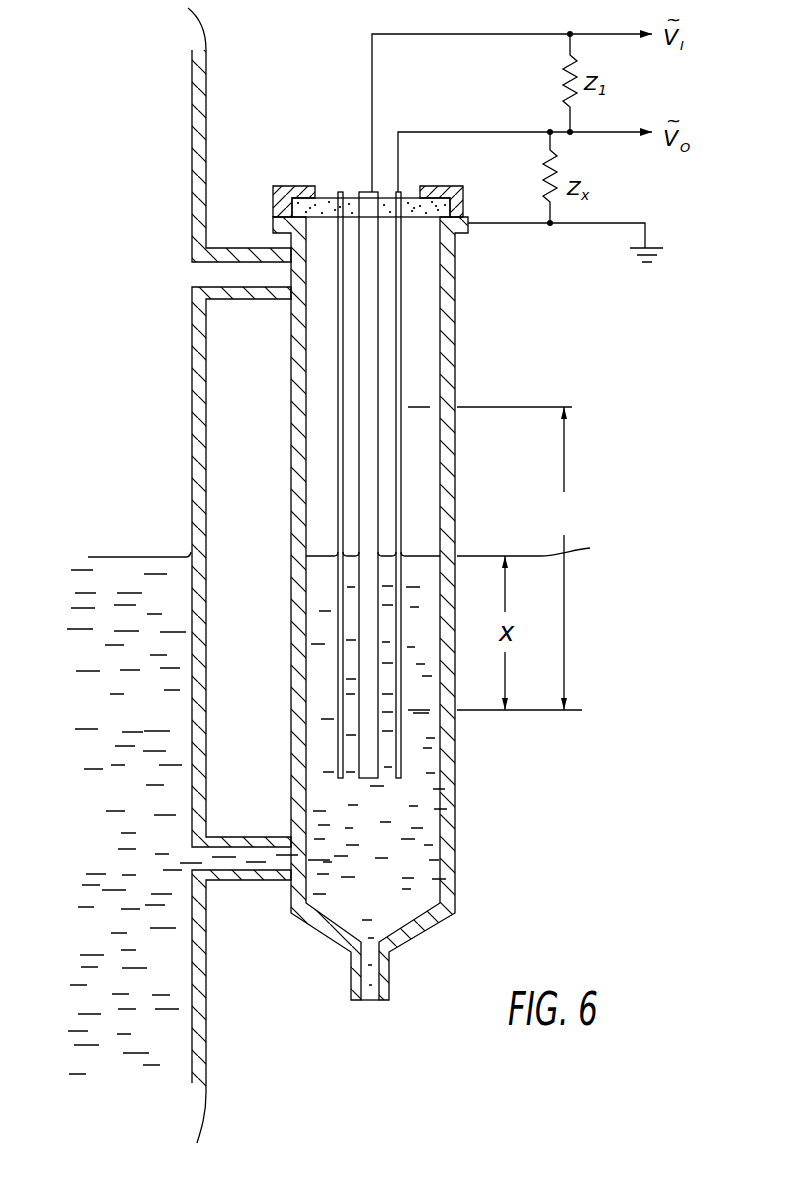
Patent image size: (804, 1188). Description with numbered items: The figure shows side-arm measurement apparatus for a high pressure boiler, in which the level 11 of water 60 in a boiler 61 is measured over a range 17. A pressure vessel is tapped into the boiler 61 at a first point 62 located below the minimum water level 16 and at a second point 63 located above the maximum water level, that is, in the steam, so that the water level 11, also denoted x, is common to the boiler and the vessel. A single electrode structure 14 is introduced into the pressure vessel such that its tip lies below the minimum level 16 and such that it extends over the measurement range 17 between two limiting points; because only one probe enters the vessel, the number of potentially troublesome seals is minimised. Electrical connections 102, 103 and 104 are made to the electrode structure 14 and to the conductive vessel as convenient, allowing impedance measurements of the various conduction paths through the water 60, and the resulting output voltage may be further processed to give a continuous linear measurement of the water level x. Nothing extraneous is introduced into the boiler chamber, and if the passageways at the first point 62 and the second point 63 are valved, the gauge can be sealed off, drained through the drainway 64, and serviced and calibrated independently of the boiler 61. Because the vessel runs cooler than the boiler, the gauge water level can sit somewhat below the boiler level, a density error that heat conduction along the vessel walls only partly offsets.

The level 11 is at (356, 556).
The electrode structure 14 is at (402, 345).
The minimum level 16 is at (362, 743).
The range 17 is at (495, 558).
The water 60 is at (150, 958).
The boiler 61 is at (205, 1047).
The first point 62 is at (225, 877).
The second point 63 is at (251, 280).
The drainway 64 is at (385, 985).
The electrical connection 102 is at (482, 34).
The electrical connection 103 is at (470, 132).
The electrical connection 104 is at (513, 224).